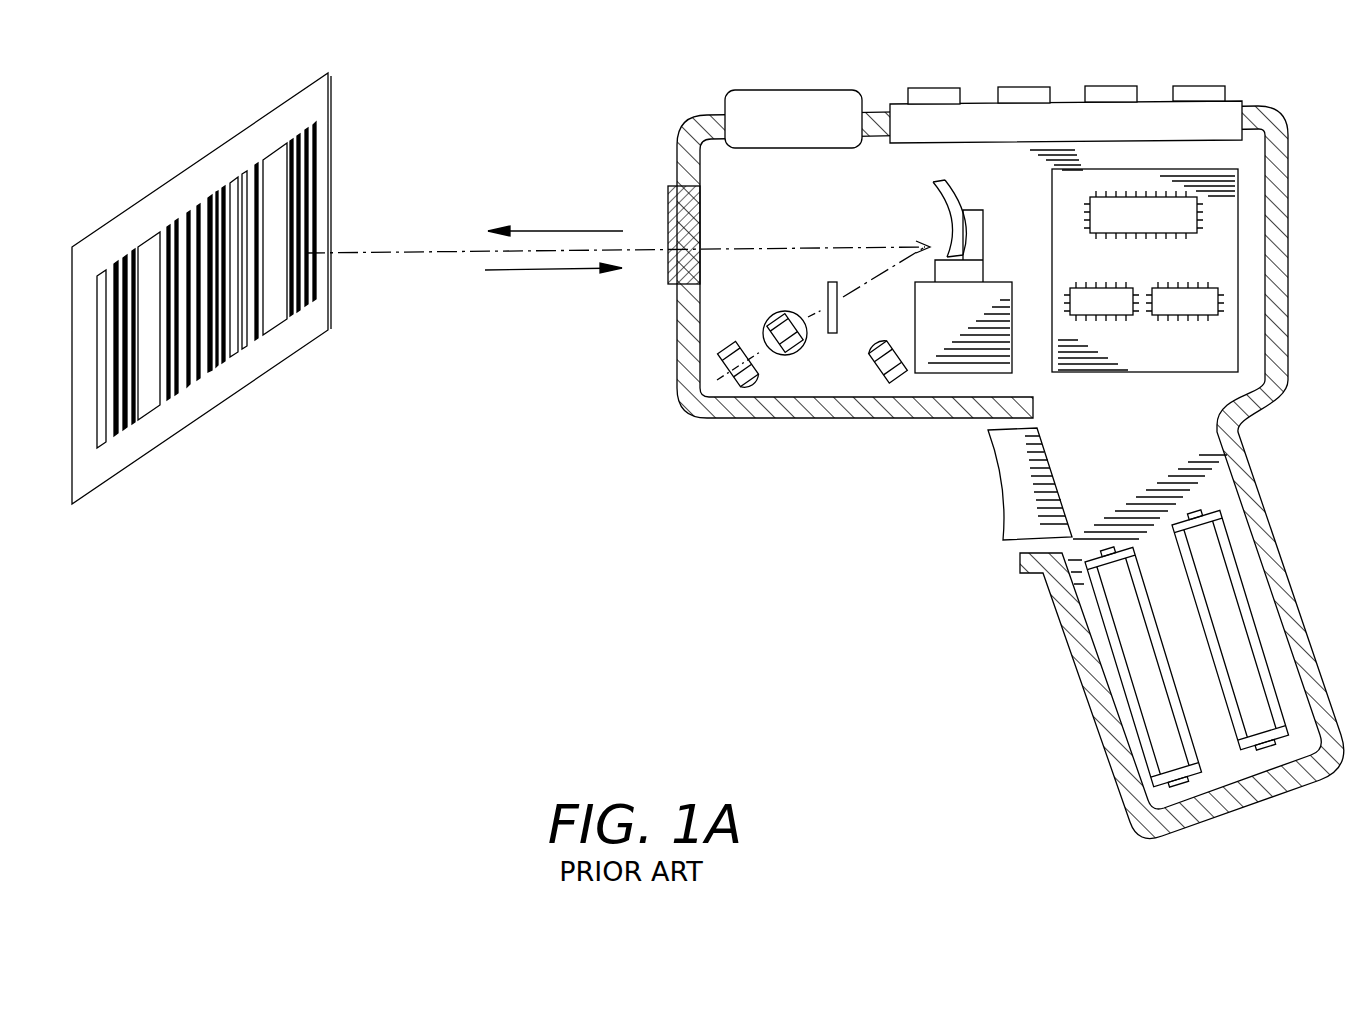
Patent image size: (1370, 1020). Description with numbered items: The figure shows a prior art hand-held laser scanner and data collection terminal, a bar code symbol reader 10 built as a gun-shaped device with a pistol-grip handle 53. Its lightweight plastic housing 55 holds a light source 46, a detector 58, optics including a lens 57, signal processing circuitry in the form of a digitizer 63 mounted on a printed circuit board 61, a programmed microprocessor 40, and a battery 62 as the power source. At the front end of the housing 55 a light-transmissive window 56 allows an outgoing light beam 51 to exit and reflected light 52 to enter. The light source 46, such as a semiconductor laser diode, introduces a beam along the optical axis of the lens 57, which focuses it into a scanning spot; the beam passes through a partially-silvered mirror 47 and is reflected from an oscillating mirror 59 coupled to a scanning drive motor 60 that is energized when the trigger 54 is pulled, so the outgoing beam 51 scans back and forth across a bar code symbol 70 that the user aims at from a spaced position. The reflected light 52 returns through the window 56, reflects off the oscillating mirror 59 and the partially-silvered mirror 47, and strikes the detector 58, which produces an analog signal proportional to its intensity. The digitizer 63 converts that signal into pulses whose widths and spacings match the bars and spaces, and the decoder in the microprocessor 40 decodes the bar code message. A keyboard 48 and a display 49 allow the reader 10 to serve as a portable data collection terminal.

The bar code symbol reader 10 is at (724, 618).
The programmed microprocessor 40 is at (1105, 215).
The light source 46 is at (743, 380).
The partially-silvered mirror 47 is at (833, 282).
The keyboard 48 is at (1138, 122).
The display 49 is at (770, 90).
The outgoing light beam 51 is at (563, 230).
The reflected light 52 is at (518, 270).
The handle 53 is at (1093, 693).
The trigger 54 is at (1027, 512).
The housing 55 is at (1282, 367).
The light-transmissive window 56 is at (666, 235).
The lens 57 is at (798, 352).
The detector 58 is at (880, 380).
The oscillating mirror 59 is at (948, 188).
The scanning drive motor 60 is at (955, 360).
The printed circuit board 61 is at (1240, 230).
The battery 62 is at (1258, 753).
The digitizer 63 is at (1105, 321).
The bar code symbol 70 is at (293, 197).